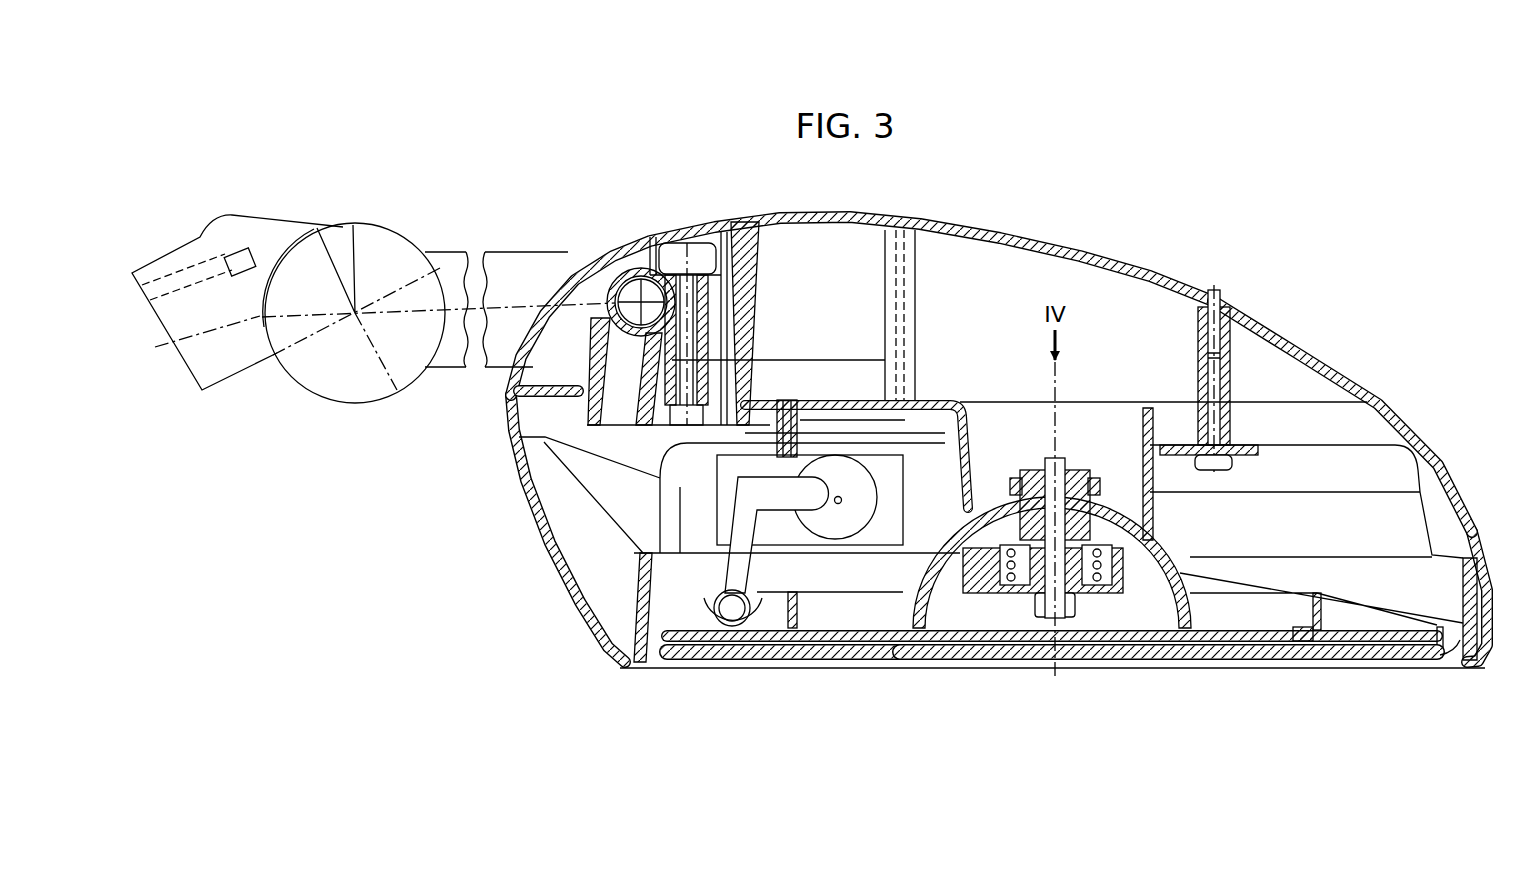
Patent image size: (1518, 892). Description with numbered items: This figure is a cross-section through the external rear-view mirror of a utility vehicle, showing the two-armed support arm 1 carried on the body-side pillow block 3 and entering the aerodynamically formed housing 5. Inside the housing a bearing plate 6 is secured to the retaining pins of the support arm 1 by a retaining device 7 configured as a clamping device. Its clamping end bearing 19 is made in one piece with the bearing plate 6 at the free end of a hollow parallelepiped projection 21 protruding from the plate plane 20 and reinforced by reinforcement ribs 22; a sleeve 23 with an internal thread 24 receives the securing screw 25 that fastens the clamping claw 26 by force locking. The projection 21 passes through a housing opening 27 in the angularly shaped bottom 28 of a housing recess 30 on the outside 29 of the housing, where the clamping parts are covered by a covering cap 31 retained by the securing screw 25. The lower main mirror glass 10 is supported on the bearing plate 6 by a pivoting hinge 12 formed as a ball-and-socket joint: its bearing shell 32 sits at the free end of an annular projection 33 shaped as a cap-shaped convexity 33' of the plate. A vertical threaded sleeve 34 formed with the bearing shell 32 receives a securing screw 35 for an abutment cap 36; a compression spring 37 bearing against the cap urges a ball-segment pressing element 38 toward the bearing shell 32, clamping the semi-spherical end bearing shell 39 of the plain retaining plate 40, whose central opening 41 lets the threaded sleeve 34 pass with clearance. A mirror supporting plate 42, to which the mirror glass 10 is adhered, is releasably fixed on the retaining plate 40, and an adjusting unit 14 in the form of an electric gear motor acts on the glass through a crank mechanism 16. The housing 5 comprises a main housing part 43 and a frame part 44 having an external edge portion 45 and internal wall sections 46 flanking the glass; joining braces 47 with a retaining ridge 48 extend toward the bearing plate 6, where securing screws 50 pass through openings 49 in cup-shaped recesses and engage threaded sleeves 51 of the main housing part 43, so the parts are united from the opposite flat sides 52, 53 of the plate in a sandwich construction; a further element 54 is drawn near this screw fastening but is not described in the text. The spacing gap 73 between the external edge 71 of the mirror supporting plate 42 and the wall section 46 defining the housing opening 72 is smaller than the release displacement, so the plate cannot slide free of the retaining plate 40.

The two-armed support arm 1 is at (500, 250).
The pillow block 3 is at (263, 232).
The housing 5 is at (1117, 252).
The bearing plate 6 is at (940, 400).
The retaining device 7 is at (593, 297).
The mirror glass 10 is at (1095, 648).
The pivoting hinge 12 is at (1088, 473).
The adjusting unit 14 is at (783, 530).
The crank mechanism 16 is at (728, 522).
The clamping end bearing 19 is at (660, 291).
The plate plane 20 is at (1138, 402).
The projection 21 is at (693, 347).
The reinforcement ribs 22 is at (630, 412).
The sleeve 23 is at (735, 380).
The internal thread 24 is at (672, 424).
The securing screw 25 is at (631, 379).
The clamping claw 26 is at (647, 241).
The housing opening 27 is at (708, 322).
The bottom 28 is at (718, 256).
The outside of the housing 29 is at (752, 222).
The housing recess 30 is at (497, 365).
The covering cap 31 is at (568, 290).
The bearing shell 32 is at (968, 505).
The annular projection 33 is at (1077, 497).
The cap-shaped convexity 33' is at (1088, 513).
The threaded sleeve 34 is at (1160, 537).
The securing screw 35 is at (1068, 598).
The abutment cap 36 is at (1013, 590).
The compression spring 37 is at (1155, 615).
The pressing element 38 is at (987, 533).
The end bearing shell 39 is at (1173, 563).
The retaining plate 40 is at (1220, 629).
The central opening 41 is at (1012, 477).
The mirror supporting plate 42 is at (1346, 632).
The main housing part 43 is at (998, 232).
The frame part 44 is at (1478, 676).
The external edge portion 45 is at (552, 580).
The wall sections 46 is at (642, 595).
The joining braces 47 is at (667, 527).
The retaining ridge 48 is at (1295, 468).
The openings 49 is at (1227, 432).
The securing screw 50 is at (1212, 380).
The threaded sleeves 51 is at (908, 318).
The flat side 52 is at (1031, 393).
The flat side 53 is at (937, 418).
The nut 54 is at (1242, 413).
The external edge 71 is at (660, 637).
The housing opening 72 is at (710, 660).
The spacing gap 73 is at (660, 652).